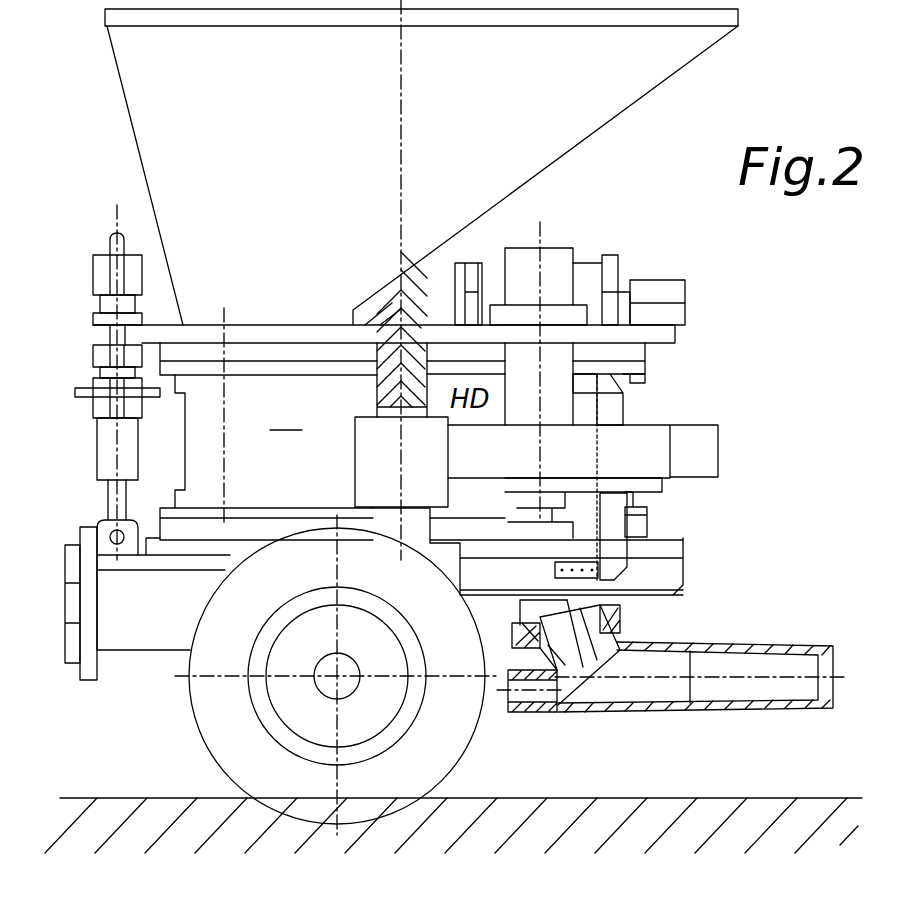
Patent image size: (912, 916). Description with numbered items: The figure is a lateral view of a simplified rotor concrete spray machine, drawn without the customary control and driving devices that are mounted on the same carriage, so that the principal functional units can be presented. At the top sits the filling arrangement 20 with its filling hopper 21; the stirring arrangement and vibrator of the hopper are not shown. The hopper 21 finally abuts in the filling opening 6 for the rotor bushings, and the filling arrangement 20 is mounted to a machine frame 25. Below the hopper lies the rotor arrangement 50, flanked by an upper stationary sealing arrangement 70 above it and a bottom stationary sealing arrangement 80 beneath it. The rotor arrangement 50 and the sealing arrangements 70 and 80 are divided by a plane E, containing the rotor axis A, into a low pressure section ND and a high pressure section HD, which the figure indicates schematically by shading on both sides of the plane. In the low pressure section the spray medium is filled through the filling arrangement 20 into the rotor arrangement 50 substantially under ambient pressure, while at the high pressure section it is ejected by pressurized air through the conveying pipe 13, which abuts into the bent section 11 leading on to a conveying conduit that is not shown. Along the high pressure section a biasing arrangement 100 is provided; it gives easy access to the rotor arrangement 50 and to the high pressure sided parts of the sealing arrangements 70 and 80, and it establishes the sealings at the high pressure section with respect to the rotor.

The filling arrangement 20 is at (130, 147).
The filling hopper 21 is at (566, 135).
The filling opening 6 is at (280, 325).
The machine frame 25 is at (660, 332).
The upper stationary sealing arrangement 70 is at (627, 353).
The rotor arrangement 50 is at (421, 457).
The biasing arrangement 100 is at (692, 453).
The bottom stationary sealing arrangement 80 is at (640, 527).
The conveying pipe 13 is at (530, 693).
The bent section 11 is at (738, 690).